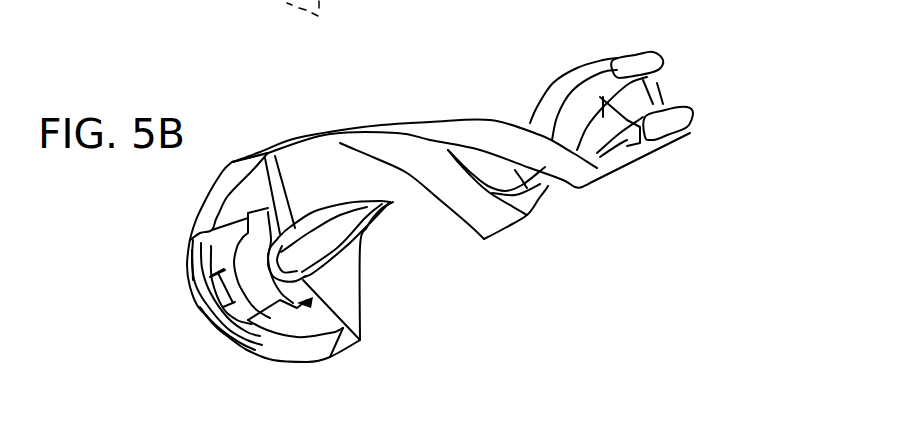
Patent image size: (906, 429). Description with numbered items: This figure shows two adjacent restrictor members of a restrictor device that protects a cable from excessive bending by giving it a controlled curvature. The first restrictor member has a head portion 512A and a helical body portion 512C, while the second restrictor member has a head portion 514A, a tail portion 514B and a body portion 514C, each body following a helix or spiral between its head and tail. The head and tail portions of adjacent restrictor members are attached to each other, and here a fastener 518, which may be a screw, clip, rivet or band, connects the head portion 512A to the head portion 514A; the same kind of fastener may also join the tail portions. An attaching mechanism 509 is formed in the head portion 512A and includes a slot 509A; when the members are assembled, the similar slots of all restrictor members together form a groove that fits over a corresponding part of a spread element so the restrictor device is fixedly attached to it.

The attaching mechanism 509 is at (310, 302).
The slot 509A is at (257, 212).
The head portion 512A is at (187, 268).
The body portion 512C is at (437, 192).
The head portion 514A is at (636, 62).
The tail portion 514B is at (680, 124).
The body portion 514C is at (471, 120).
The fastener 518 is at (232, 292).